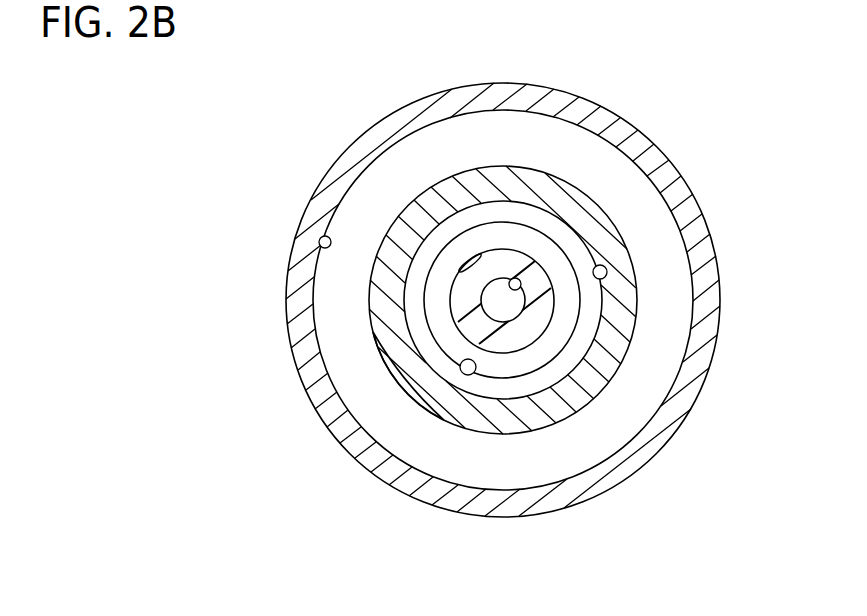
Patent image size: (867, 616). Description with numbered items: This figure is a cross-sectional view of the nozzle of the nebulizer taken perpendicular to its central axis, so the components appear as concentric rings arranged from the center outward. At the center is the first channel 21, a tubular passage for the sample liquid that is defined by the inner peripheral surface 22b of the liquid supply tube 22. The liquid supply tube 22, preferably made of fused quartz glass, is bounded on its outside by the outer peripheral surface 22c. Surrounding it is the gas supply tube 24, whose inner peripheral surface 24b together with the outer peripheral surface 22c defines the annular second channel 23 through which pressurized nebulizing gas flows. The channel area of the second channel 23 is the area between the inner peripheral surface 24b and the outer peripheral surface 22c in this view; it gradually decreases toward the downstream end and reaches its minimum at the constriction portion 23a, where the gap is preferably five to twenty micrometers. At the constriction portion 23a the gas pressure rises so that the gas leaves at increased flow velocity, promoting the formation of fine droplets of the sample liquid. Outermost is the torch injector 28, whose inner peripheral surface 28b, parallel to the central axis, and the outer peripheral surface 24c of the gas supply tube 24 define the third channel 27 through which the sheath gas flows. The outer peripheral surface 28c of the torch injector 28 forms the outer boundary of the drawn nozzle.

The first channel 21 is at (515, 314).
The liquid supply tube 22 is at (528, 331).
The inner peripheral surface of the liquid supply tube 22b is at (521, 279).
The outer peripheral surface of the liquid supply tube 22c is at (458, 260).
The second channel 23 is at (439, 326).
The constriction portion 23a is at (470, 376).
The gas supply tube 24 is at (503, 425).
The inner peripheral surface of the gas supply tube 24b is at (606, 268).
The outer peripheral surface of the gas supply tube 24c is at (453, 172).
The third channel 27 is at (658, 360).
The torch injector 28 is at (713, 287).
The inner peripheral surface of the torch injector 28b is at (320, 240).
The outer surface 28c is at (652, 134).